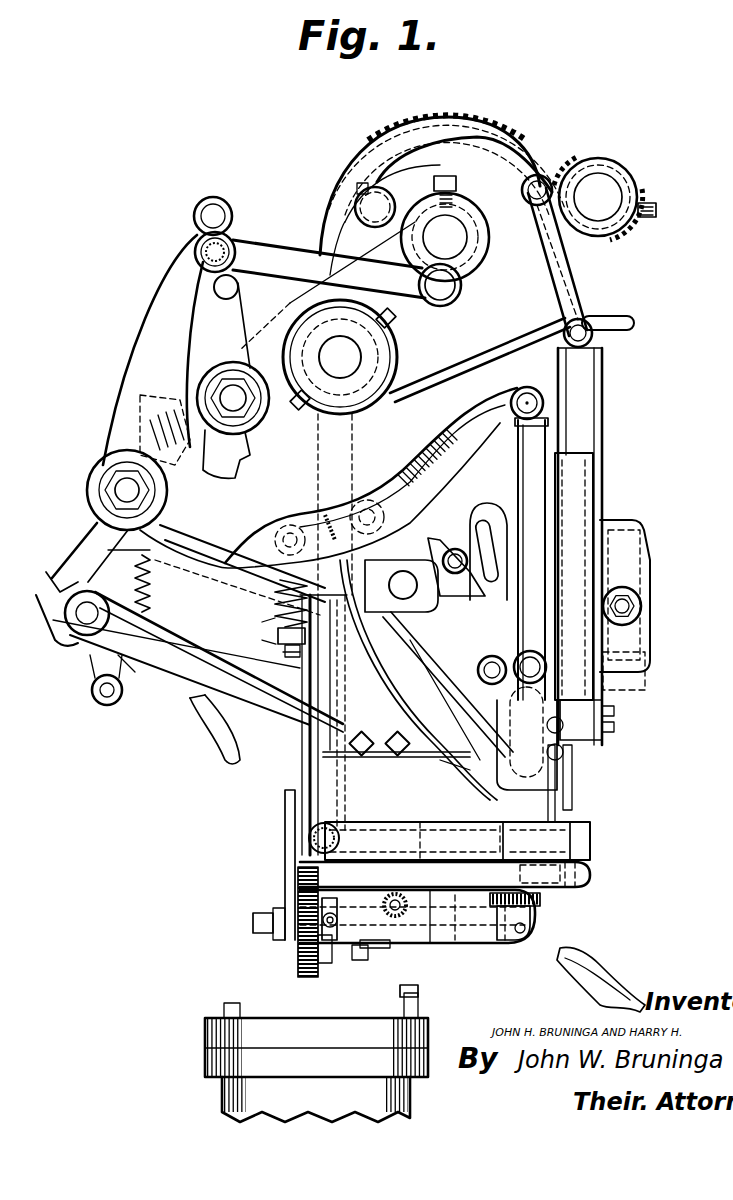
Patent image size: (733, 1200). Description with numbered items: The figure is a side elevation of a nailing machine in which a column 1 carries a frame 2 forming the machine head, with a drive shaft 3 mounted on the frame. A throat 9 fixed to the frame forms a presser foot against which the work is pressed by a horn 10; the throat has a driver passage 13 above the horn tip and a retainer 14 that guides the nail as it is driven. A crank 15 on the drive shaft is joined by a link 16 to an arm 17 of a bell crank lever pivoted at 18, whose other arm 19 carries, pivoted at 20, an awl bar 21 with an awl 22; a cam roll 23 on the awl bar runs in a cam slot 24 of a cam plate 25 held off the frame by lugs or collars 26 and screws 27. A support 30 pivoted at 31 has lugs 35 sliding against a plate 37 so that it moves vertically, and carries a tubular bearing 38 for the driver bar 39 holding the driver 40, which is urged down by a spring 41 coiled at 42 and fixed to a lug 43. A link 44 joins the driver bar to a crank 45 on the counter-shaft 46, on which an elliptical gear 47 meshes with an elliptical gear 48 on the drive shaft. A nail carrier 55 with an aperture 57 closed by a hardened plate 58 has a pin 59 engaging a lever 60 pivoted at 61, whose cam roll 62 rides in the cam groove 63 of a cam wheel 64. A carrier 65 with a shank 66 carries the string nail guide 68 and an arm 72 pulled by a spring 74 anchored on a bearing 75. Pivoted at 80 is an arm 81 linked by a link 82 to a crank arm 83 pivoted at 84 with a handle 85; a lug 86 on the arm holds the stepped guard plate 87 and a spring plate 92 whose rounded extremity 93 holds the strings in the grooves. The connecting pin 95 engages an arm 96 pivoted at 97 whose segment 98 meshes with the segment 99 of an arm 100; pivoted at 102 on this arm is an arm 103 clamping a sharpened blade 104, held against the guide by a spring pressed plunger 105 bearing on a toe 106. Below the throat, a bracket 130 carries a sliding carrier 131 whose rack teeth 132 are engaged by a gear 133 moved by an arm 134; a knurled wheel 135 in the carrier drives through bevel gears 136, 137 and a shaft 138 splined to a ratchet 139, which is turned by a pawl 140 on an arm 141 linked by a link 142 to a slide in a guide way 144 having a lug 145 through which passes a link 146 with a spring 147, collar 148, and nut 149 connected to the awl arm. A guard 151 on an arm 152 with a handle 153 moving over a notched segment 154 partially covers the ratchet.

The column 1 is at (385, 1093).
The frame 2 is at (290, 303).
The drive shaft 3 is at (450, 233).
The throat 9 is at (590, 870).
The horn 10 is at (607, 980).
The driver passage 13 is at (583, 860).
The retainer 14 is at (560, 870).
The crank 15 is at (458, 287).
The link 16 is at (329, 269).
The arm 17 is at (160, 305).
The pivot 18 is at (120, 480).
The arm 19 is at (420, 447).
The pivot 20 is at (515, 395).
The awl bar 21 is at (517, 450).
The awl 22 is at (552, 803).
The cam roll 23 is at (492, 684).
The cam slot 24 is at (500, 525).
The cam plate 25 is at (477, 513).
The lugs or collars 26 is at (453, 552).
The screws 27 is at (448, 548).
The support 30 is at (600, 422).
The pivot 31 is at (592, 318).
The lugs 35 is at (640, 535).
The plate 37 is at (645, 600).
The tubular bearing 38 is at (582, 490).
The driver bar 39 is at (590, 382).
The driver 40 is at (574, 760).
The spring 41 is at (634, 322).
The coil 42 is at (325, 420).
The lug 43 is at (300, 348).
The link 44 is at (590, 256).
The crank 45 is at (572, 175).
The counter-shaft 46 is at (603, 190).
The elliptical gear 47 is at (645, 240).
The elliptical gear 48 is at (432, 115).
The nail carrier 55 is at (420, 835).
The aperture 57 is at (483, 837).
The hardened plate 58 is at (508, 842).
The pin 59 is at (310, 835).
The lever 60 is at (353, 437).
The pivot 61 is at (398, 330).
The cam roll 62 is at (354, 208).
The cam groove 63 is at (395, 168).
The cam wheel 64 is at (505, 130).
The carrier 65 is at (362, 757).
The shank 66 is at (418, 660).
The string nail guide 68 is at (493, 790).
The arm 72 is at (252, 560).
The spring 74 is at (137, 600).
The bearing 75 is at (120, 545).
The pivot 80 is at (412, 596).
The arm 81 is at (398, 577).
The link 82 is at (208, 573).
The crank arm 83 is at (95, 683).
The pivot 84 is at (125, 675).
The handle 85 is at (217, 745).
The lug 86 is at (350, 503).
The plate 87 is at (410, 695).
The spring plate 92 is at (425, 690).
The rounded extremity 93 is at (400, 757).
The connecting pin 95 is at (196, 252).
The arm 96 is at (220, 200).
The pivot 97 is at (205, 392).
The segment 98 is at (245, 465).
The segment 99 is at (150, 413).
The arm 100 is at (88, 527).
The pivot 102 is at (80, 638).
The arm 103 is at (193, 712).
The sharpened blade 104 is at (455, 775).
The spring pressed plunger 105 is at (50, 577).
The toe 106 is at (45, 603).
The bracket 130 is at (360, 960).
The carrier 131 is at (460, 905).
The rack teeth 132 is at (373, 937).
The gear 133 is at (397, 895).
The arm 134 is at (410, 993).
The knurled wheel 135 is at (542, 897).
The bevel gear 136 is at (540, 910).
The bevel gear 137 is at (535, 928).
The shaft 138 is at (478, 925).
The ratchet 139 is at (280, 972).
The pawl 140 is at (305, 855).
The arm 141 is at (287, 883).
The link 142 is at (302, 762).
The guide way 144 is at (300, 718).
The lug 145 is at (268, 640).
The link 146 is at (275, 700).
The spring 147 is at (268, 625).
The collar 148 is at (270, 602).
The nut 149 is at (285, 650).
The guard 151 is at (327, 862).
The arm 152 is at (365, 862).
The handle 153 is at (337, 915).
The notched segment 154 is at (323, 963).